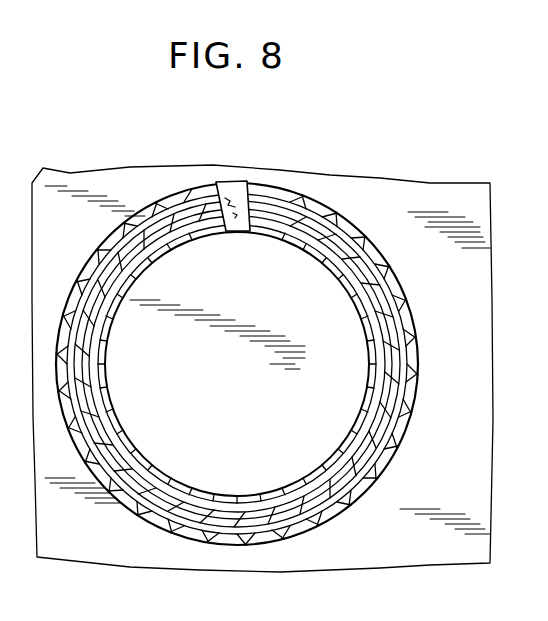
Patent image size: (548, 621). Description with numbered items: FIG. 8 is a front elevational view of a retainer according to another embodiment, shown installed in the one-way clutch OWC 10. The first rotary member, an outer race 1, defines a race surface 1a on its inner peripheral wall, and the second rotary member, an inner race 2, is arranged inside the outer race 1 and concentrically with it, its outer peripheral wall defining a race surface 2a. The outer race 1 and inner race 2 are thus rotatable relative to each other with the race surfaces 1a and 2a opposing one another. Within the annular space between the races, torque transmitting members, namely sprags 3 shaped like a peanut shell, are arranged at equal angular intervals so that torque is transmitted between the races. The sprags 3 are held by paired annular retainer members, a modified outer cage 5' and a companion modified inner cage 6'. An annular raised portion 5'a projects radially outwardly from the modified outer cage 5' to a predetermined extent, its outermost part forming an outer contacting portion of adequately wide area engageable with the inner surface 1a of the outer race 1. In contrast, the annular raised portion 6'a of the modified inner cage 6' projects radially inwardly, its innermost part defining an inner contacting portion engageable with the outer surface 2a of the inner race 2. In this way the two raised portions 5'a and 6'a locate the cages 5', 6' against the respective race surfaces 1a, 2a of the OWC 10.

The outer race 1 is at (462, 552).
The race surface 1a is at (411, 421).
The inner race 2 is at (333, 408).
The race surface 2a is at (370, 415).
The sprag 3 is at (259, 184).
The modified outer cage 5' is at (237, 375).
The annular raised portion 5'a is at (261, 367).
The modified inner cage 6' is at (237, 364).
The annular raised portion 6'a is at (237, 368).
The OWC 10 is at (371, 213).